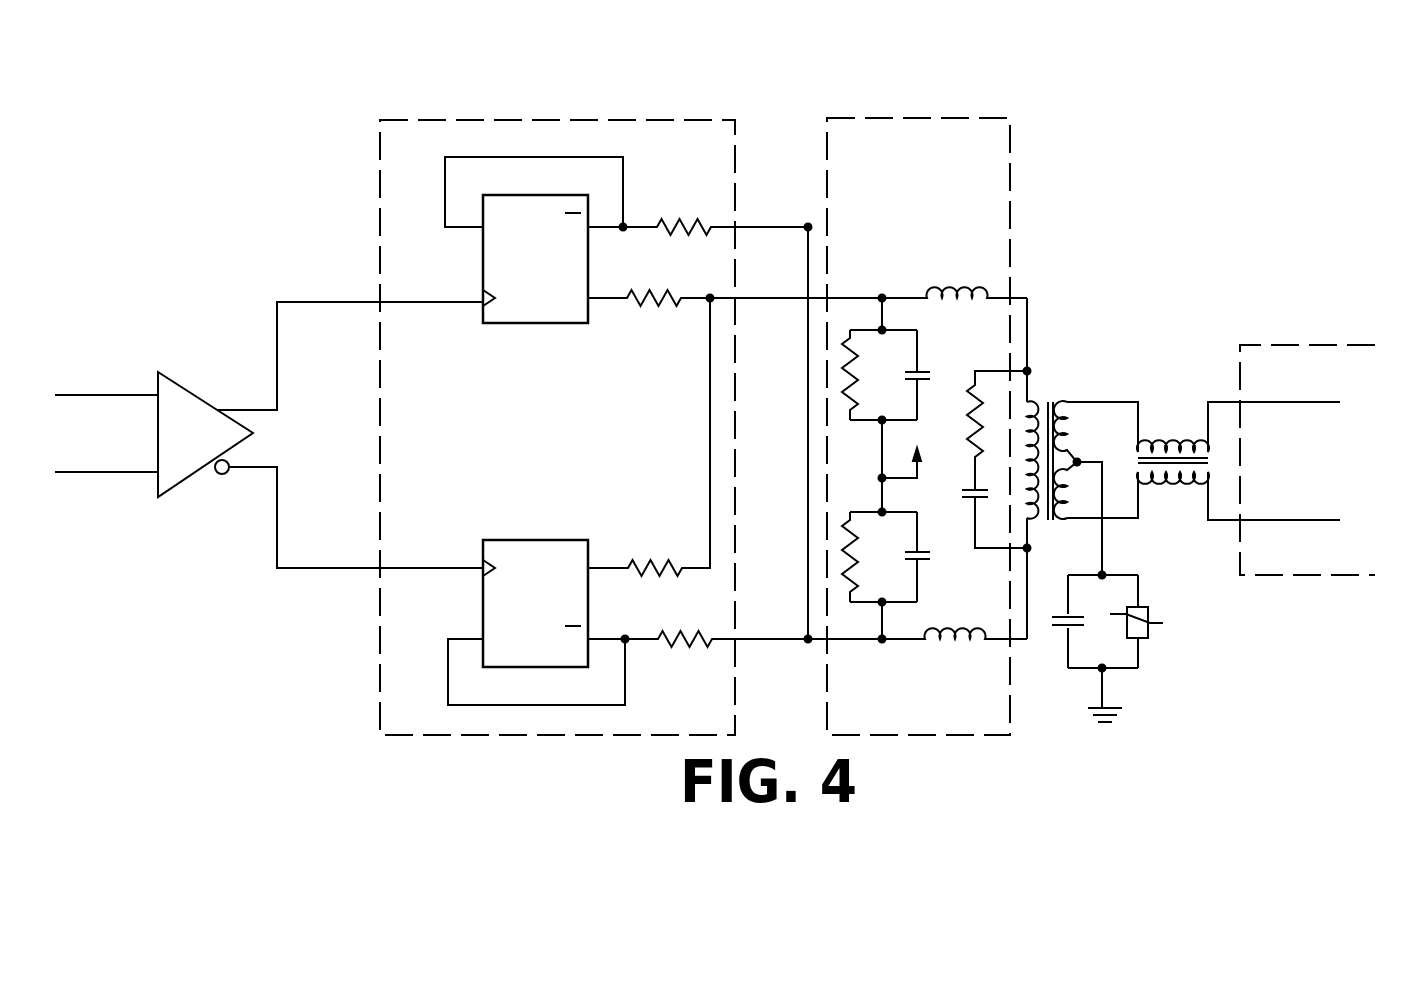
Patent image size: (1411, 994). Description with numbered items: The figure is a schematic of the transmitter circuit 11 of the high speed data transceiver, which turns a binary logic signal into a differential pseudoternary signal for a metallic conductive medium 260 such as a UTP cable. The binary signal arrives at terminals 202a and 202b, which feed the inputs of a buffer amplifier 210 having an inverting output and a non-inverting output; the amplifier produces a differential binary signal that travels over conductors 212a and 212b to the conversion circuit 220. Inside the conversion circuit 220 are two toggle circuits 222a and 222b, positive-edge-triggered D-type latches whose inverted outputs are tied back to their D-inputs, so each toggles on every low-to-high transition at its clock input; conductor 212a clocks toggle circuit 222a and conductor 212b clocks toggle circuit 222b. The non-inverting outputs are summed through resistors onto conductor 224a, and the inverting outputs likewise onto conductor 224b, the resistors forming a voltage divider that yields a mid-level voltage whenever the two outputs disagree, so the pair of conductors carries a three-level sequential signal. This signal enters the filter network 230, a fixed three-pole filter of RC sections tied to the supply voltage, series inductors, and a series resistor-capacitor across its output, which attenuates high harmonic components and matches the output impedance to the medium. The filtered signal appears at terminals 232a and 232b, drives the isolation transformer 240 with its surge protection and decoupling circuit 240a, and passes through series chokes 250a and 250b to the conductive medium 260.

The transmitter circuit 11 is at (833, 96).
The terminal 202a is at (93, 391).
The terminal 202b is at (90, 476).
The buffer amplifier 210 is at (172, 370).
The conductor 212a is at (303, 298).
The conductor 212b is at (342, 572).
The conversion circuit 220 is at (532, 120).
The toggle circuit 222a is at (507, 323).
The toggle circuit 222b is at (523, 540).
The conductor 224a is at (763, 302).
The conductor 224b is at (767, 643).
The filter network 230 is at (900, 118).
The terminal 232a is at (1026, 313).
The terminal 232b is at (1030, 592).
The isolation transformer 240 is at (1052, 397).
The surge protection network 240a is at (1163, 640).
The series choke 250a is at (1173, 437).
The series choke 250b is at (1178, 490).
The metallic conductive medium 260 is at (1285, 342).